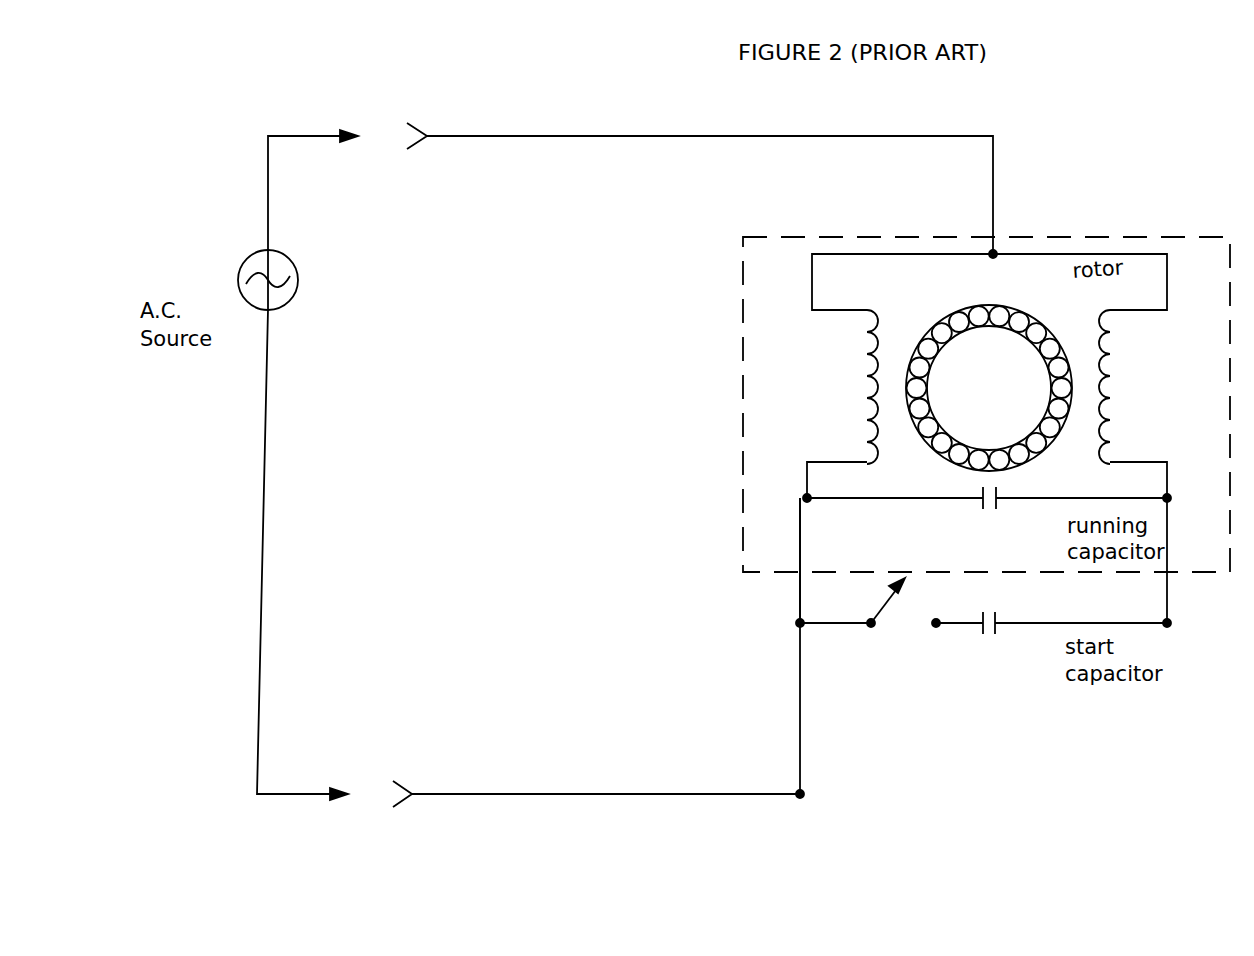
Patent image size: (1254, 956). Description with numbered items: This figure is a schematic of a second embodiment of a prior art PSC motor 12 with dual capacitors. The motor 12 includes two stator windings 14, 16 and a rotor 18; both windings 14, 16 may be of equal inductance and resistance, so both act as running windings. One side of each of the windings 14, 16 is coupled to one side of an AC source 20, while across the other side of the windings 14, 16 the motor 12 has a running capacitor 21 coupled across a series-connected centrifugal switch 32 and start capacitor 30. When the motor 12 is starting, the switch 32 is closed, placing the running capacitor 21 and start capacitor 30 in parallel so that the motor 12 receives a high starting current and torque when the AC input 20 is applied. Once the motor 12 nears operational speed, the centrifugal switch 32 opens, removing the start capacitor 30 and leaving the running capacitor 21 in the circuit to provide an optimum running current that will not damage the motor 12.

The PSC motor 12 is at (1090, 241).
The stator winding 14 is at (860, 373).
The stator winding 16 is at (1122, 378).
The rotor 18 is at (998, 307).
The AC source 20 is at (232, 284).
The running capacitor 21 is at (1008, 503).
The start capacitor 30 is at (990, 634).
The centrifugal switch 32 is at (905, 640).